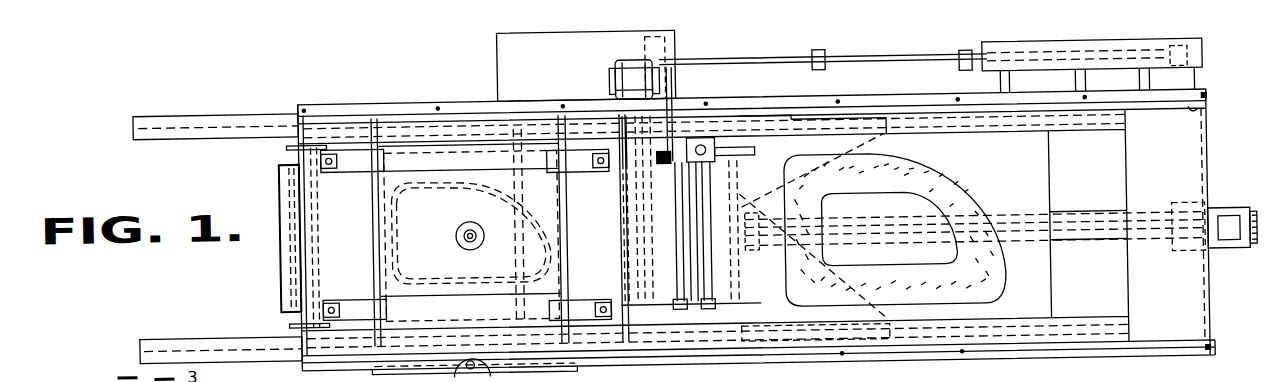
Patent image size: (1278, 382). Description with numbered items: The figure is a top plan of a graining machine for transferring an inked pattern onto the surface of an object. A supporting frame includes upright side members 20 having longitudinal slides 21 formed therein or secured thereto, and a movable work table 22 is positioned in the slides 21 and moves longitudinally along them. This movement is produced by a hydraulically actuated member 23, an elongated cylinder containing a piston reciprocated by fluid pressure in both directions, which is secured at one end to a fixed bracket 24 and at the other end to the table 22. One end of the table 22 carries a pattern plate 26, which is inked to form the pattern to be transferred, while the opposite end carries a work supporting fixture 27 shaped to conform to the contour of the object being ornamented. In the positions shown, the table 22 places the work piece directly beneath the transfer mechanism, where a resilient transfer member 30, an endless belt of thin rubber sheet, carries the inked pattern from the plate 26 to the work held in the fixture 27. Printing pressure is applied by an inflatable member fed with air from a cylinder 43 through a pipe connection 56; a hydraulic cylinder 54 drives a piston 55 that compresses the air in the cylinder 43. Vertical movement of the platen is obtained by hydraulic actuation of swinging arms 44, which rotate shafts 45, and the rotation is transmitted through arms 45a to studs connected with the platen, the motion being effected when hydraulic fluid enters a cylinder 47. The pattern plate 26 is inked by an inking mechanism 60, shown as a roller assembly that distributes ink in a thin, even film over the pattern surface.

The upright side members 20 is at (1208, 103).
The longitudinal slides 21 is at (1200, 118).
The movable work table 22 is at (1042, 181).
The hydraulically actuated member 23 is at (1117, 250).
The fixed bracket 24 is at (1230, 212).
The pattern plate 26 is at (940, 309).
The work supporting fixture 27 is at (418, 94).
The resilient transfer member 30 is at (280, 241).
The air cylinder 43 is at (505, 37).
The swinging arms 44 is at (400, 350).
The shafts 45 is at (380, 246).
The arms 45a is at (355, 166).
The platen cylinder 47 is at (460, 352).
The cylinder 54 is at (1000, 48).
The piston 55 is at (682, 45).
The pipe connection 56 is at (514, 60).
The inking mechanism 60 is at (708, 305).